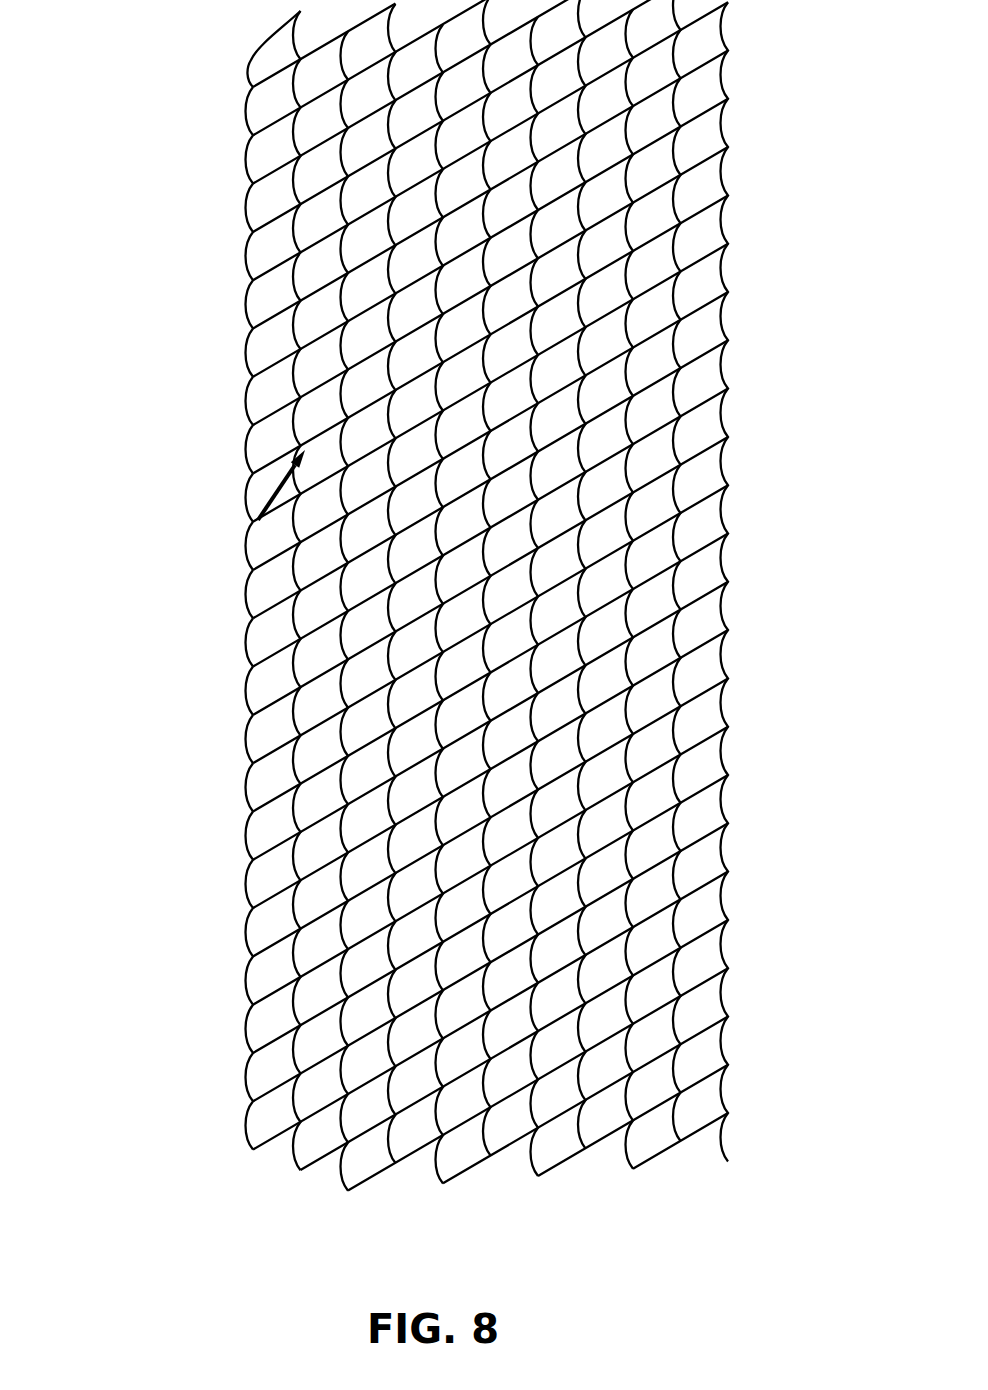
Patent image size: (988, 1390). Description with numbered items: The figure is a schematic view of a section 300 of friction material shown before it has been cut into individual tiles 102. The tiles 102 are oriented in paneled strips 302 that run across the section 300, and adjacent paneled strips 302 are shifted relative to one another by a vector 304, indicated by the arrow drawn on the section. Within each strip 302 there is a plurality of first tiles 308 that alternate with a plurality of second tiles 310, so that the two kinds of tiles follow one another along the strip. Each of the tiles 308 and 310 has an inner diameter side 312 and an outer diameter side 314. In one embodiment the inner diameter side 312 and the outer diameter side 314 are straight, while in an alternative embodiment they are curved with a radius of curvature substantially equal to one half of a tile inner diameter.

The section of friction material 300 is at (768, 290).
The paneled strips 302 is at (703, 1162).
The tiles 102 is at (275, 433).
The vector 304 is at (275, 495).
The first tiles 308 is at (275, 735).
The second tiles 310 is at (312, 763).
The inner diameter side 312 is at (312, 702).
The outer diameter side 314 is at (263, 757).